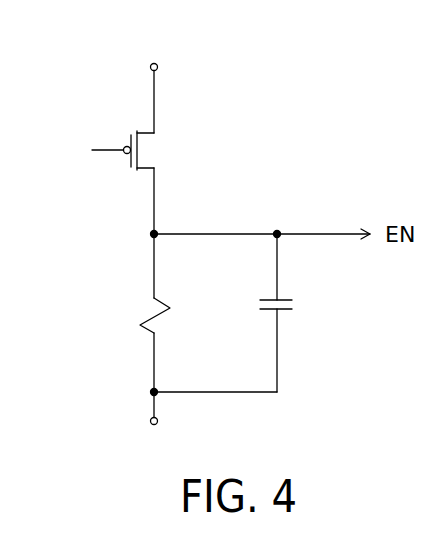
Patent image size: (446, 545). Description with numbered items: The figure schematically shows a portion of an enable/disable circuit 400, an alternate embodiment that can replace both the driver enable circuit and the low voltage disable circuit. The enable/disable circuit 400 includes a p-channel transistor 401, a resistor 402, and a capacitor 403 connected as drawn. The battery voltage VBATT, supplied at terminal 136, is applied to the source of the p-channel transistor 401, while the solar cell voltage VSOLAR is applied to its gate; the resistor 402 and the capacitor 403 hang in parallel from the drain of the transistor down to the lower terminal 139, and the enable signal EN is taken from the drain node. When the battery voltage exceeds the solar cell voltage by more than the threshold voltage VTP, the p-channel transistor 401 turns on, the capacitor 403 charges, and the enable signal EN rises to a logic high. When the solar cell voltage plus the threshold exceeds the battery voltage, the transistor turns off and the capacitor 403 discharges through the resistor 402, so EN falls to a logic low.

The enable/disable circuit 400 is at (326, 64).
The battery voltage terminal (VBATT) 136 is at (157, 70).
The p-channel transistor 401 is at (145, 131).
The resistor 402 is at (153, 312).
The capacitor 403 is at (285, 297).
The ground terminal 139 is at (157, 424).